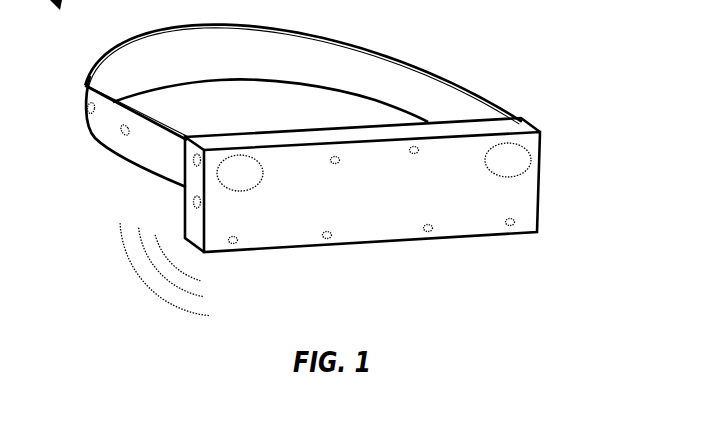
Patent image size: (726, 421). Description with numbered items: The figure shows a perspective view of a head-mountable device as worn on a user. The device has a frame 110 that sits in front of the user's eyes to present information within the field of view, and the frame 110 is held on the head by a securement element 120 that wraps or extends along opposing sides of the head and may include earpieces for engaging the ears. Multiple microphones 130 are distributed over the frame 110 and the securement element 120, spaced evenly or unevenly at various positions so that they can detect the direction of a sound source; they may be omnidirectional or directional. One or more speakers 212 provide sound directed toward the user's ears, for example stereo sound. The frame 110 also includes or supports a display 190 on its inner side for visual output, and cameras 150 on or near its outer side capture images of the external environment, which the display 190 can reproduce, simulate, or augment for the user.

The frame 110 is at (370, 149).
The securement element 120 is at (82, 88).
The microphones 130 is at (88, 113).
The cameras 150 is at (533, 158).
The display 190 is at (295, 128).
The speakers 212 is at (184, 188).